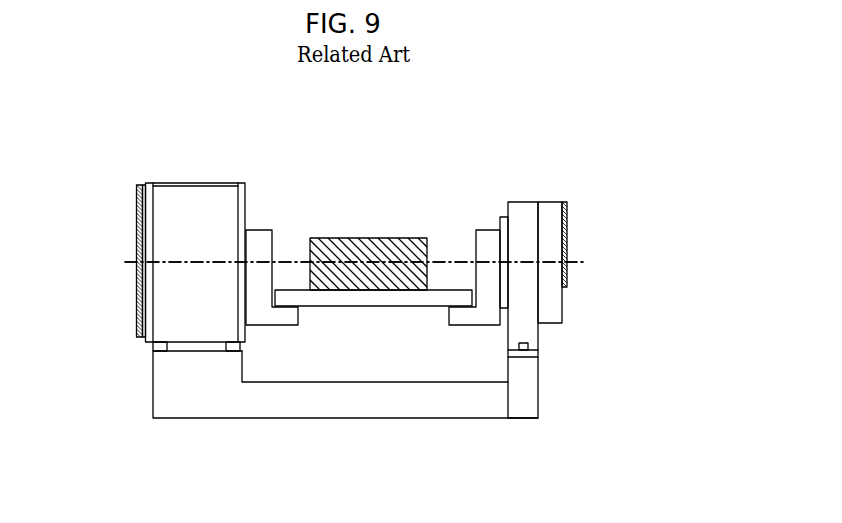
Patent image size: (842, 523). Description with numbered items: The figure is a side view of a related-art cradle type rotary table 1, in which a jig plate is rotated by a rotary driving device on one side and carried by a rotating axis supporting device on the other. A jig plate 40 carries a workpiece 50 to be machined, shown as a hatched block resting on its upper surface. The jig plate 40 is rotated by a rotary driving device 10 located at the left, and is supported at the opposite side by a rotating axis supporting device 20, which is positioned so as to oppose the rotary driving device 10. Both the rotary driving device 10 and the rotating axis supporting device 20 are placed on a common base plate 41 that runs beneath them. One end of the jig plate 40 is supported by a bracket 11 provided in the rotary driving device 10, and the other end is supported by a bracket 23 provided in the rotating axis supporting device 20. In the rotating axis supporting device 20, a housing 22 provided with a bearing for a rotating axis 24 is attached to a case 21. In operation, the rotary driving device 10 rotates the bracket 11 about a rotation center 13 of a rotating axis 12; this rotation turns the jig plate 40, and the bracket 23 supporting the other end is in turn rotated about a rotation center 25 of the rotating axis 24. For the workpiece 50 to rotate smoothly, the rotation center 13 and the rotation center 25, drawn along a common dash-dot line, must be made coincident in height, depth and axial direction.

The cradle type rotary table 1 is at (130, 121).
The rotary driving device 10 is at (187, 227).
The bracket 11 is at (263, 227).
The rotating axis 12 is at (137, 290).
The rotation center 13 is at (130, 262).
The rotating axis supporting device 20 is at (582, 198).
The case 21 is at (527, 325).
The housing 22 is at (552, 285).
The bracket 23 is at (474, 242).
The rotating axis 24 is at (567, 238).
The rotation center 25 is at (587, 262).
The jig plate 40 is at (433, 298).
The base plate 41 is at (182, 397).
The workpiece 50 is at (348, 273).